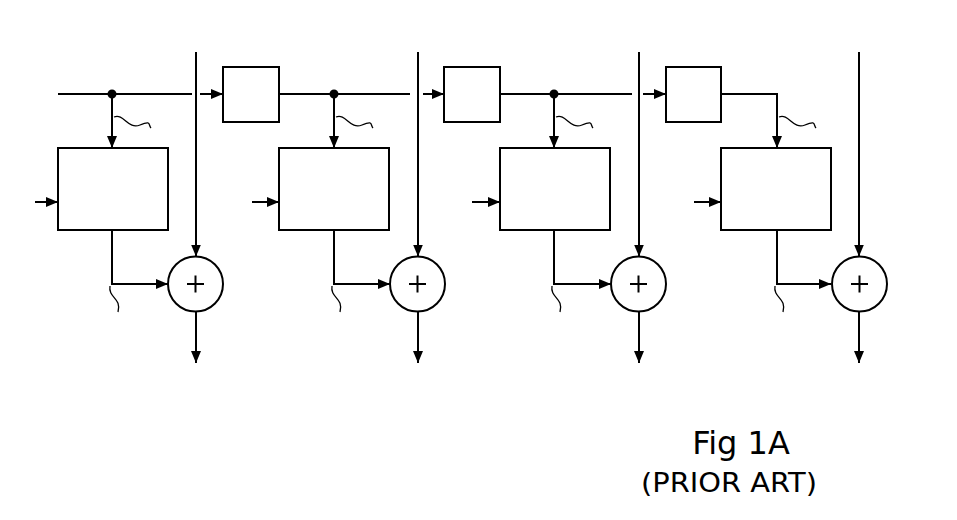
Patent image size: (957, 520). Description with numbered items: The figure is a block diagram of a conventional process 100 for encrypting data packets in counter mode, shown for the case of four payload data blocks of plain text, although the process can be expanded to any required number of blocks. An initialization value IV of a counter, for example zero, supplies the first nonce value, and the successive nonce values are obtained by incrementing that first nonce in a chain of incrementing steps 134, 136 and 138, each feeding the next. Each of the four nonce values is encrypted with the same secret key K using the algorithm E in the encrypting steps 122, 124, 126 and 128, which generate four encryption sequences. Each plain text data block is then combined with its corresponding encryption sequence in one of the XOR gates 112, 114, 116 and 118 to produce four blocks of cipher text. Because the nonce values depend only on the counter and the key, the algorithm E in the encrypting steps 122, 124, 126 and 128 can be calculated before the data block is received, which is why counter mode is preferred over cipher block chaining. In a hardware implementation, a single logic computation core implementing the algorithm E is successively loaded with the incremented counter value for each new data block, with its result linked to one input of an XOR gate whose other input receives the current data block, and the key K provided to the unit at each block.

The process for encrypting data packets in counter mode 100 is at (98, 409).
The XOR gate 112 is at (220, 296).
The XOR gate 114 is at (442, 296).
The XOR gate 116 is at (663, 296).
The XOR gate 118 is at (847, 308).
The encrypting step 122 is at (85, 231).
The encrypting step 124 is at (306, 231).
The encrypting step 126 is at (527, 231).
The encrypting step 128 is at (747, 231).
The incrementing step 134 is at (238, 67).
The incrementing step 136 is at (459, 67).
The incrementing step 138 is at (680, 67).